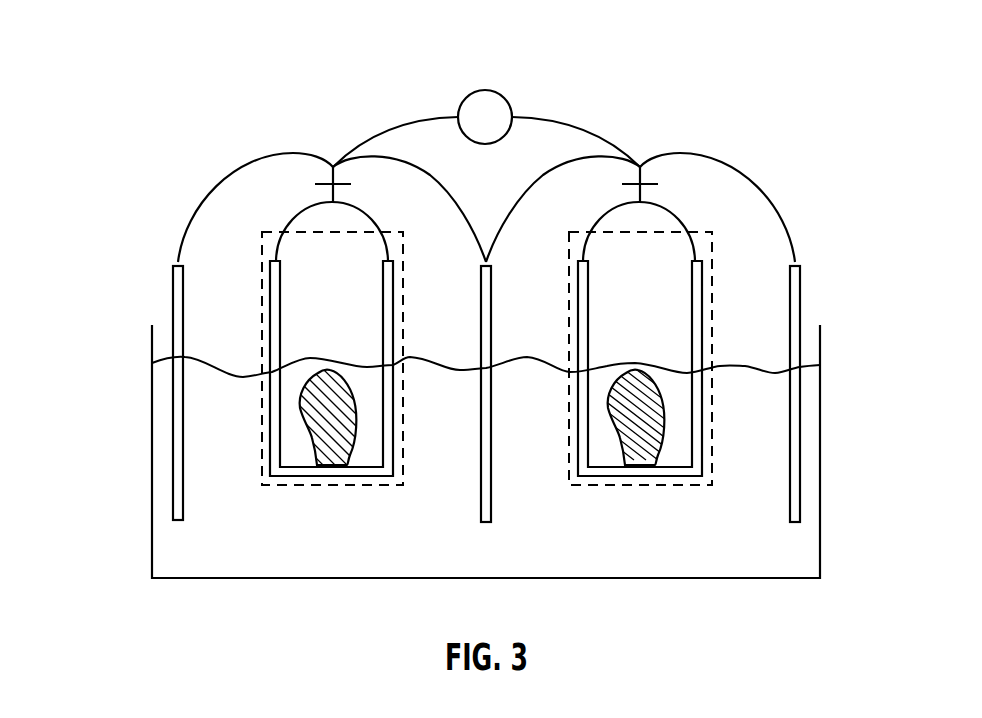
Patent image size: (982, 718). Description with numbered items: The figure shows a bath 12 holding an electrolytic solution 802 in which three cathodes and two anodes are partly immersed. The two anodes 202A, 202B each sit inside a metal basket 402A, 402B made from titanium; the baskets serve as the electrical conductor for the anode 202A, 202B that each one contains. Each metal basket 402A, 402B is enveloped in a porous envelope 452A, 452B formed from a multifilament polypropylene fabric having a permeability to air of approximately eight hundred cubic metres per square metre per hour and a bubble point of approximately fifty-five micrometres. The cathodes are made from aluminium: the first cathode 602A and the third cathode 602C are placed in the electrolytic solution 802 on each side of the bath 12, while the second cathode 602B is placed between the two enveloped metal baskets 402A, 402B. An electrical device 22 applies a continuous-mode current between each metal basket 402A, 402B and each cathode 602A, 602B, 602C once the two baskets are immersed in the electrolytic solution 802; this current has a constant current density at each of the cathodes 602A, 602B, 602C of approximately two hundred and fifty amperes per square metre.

The bath 12 is at (152, 347).
The electrical device 22 is at (485, 90).
The anode 202A is at (323, 455).
The anode 202B is at (645, 458).
The metal basket 402A is at (268, 434).
The metal basket 402B is at (693, 478).
The porous envelope 452A is at (262, 384).
The porous envelope 452B is at (569, 460).
The first cathode 602A is at (173, 503).
The second cathode 602B is at (481, 490).
The third cathode 602C is at (800, 500).
The electrolytic solution 802 is at (808, 412).